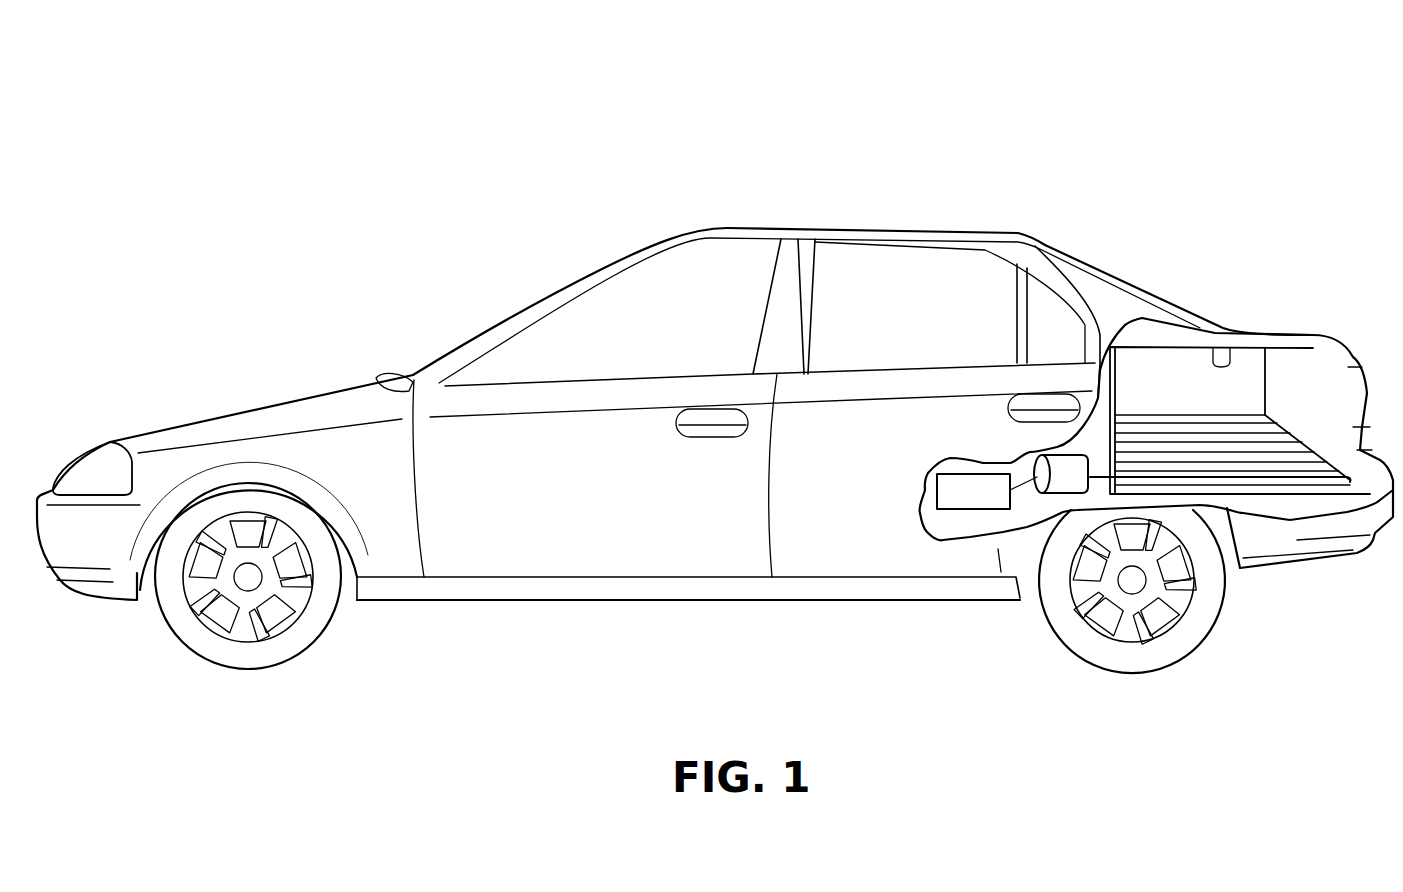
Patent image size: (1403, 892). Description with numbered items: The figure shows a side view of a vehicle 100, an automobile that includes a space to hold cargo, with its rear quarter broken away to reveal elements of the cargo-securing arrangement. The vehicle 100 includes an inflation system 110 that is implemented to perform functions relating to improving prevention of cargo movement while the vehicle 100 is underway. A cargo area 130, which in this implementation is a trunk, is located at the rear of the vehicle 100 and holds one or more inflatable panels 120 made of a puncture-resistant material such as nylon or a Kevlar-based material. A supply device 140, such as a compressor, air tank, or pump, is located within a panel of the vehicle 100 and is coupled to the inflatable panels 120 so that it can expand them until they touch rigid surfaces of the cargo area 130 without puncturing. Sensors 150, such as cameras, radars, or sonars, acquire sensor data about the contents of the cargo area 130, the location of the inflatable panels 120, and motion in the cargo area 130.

The vehicle 100 is at (534, 146).
The inflation system 110 is at (950, 474).
The inflatable panels 120 is at (1333, 470).
The cargo area 130 is at (1183, 363).
The supply device 140 is at (1037, 458).
The sensors 150 is at (1225, 473).